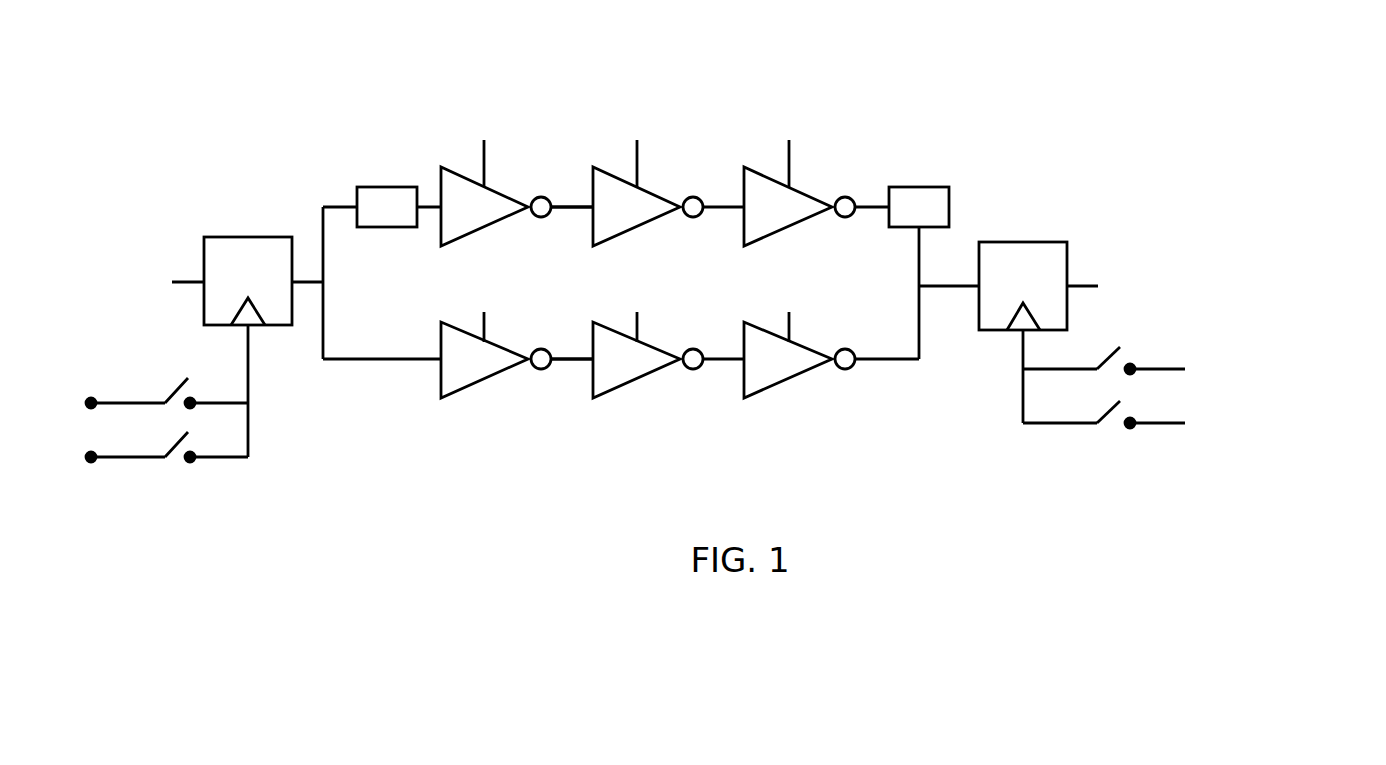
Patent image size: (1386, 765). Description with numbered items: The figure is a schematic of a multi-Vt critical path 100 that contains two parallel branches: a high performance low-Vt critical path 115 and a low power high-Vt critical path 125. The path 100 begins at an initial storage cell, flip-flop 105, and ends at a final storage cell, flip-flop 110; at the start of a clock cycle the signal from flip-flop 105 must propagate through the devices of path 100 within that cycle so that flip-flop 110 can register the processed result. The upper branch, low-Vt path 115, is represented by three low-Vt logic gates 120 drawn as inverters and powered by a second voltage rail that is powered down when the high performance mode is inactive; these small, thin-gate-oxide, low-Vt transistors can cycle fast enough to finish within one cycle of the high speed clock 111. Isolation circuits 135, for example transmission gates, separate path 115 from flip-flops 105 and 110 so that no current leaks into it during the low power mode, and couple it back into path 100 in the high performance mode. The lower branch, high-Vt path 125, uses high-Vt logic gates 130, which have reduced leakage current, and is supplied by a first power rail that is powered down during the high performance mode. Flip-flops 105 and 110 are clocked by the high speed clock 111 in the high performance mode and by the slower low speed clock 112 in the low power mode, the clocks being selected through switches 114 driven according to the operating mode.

The multi-Vt critical path 100 is at (982, 95).
The initial flip-flop 105 is at (249, 237).
The final flip-flop 110 is at (1024, 242).
The high speed clock 111 is at (121, 401).
The low speed clock 112 is at (129, 460).
The switches 114 is at (203, 379).
The low-Vt critical path 115 is at (559, 209).
The low-Vt logic gates 120 is at (492, 224).
The high-Vt critical path 125 is at (559, 361).
The high-Vt logic gates 130 is at (494, 376).
The isolation circuits 135 is at (388, 187).